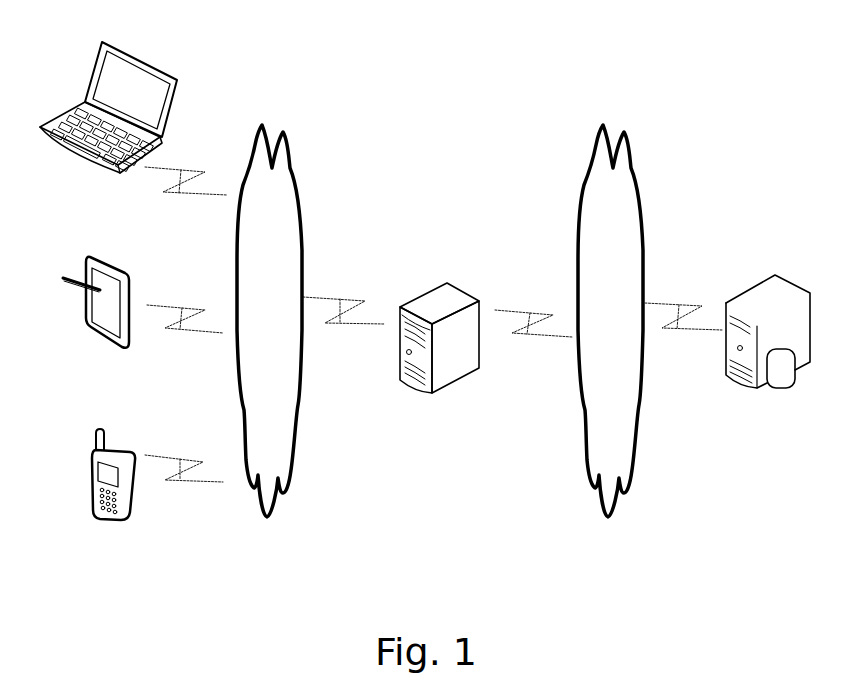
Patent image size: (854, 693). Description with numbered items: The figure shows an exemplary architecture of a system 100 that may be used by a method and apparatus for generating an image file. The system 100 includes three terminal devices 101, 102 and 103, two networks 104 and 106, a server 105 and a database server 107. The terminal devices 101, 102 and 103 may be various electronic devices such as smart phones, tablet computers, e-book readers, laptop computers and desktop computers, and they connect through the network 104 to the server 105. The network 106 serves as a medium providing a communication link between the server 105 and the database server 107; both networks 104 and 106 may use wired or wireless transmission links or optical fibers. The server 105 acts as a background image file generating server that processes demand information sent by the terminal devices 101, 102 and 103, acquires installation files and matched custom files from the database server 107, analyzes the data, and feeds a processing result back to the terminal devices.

The system 100 is at (790, 33).
The terminal device 101 is at (113, 493).
The terminal device 102 is at (96, 318).
The terminal device 103 is at (108, 126).
The network 104 is at (269, 321).
The server 105 is at (439, 367).
The network 106 is at (610, 321).
The database server 107 is at (768, 362).